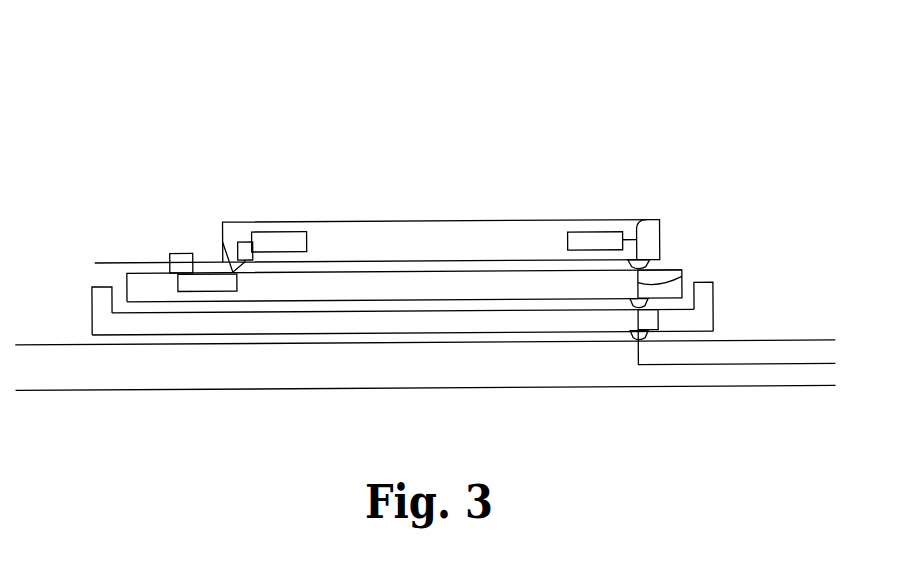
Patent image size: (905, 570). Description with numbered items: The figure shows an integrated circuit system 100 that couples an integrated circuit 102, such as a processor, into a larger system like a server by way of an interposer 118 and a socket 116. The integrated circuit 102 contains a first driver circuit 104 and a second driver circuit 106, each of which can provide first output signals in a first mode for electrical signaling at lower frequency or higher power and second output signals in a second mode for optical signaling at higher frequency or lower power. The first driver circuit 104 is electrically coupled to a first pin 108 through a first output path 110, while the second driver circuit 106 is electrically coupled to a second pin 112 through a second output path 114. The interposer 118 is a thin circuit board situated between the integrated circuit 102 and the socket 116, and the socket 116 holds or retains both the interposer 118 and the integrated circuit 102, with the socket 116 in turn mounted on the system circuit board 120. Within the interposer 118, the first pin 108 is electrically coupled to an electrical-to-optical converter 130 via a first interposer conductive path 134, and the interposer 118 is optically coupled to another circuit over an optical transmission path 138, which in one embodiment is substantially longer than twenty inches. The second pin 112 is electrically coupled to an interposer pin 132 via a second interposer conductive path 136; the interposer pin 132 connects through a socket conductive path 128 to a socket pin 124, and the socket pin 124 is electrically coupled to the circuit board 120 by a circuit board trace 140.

The integrated circuit system 100 is at (690, 88).
The integrated circuit 102 is at (425, 226).
The first driver circuit 104 is at (280, 231).
The second driver circuit 106 is at (598, 240).
The first pin 108 is at (232, 270).
The first output path 110 is at (241, 241).
The second pin 112 is at (650, 267).
The second output path 114 is at (645, 221).
The socket 116 is at (402, 323).
The interposer 118 is at (442, 297).
The circuit board 120 is at (442, 378).
The socket pin 124 is at (648, 333).
The socket conductive path 128 is at (640, 318).
The electrical-to-optical converter 130 is at (180, 252).
The interposer pin 132 is at (713, 311).
The first interposer conductive path 134 is at (207, 290).
The second interposer conductive path 136 is at (682, 279).
The optical transmission path 138 is at (108, 261).
The circuit board trace 140 is at (770, 366).